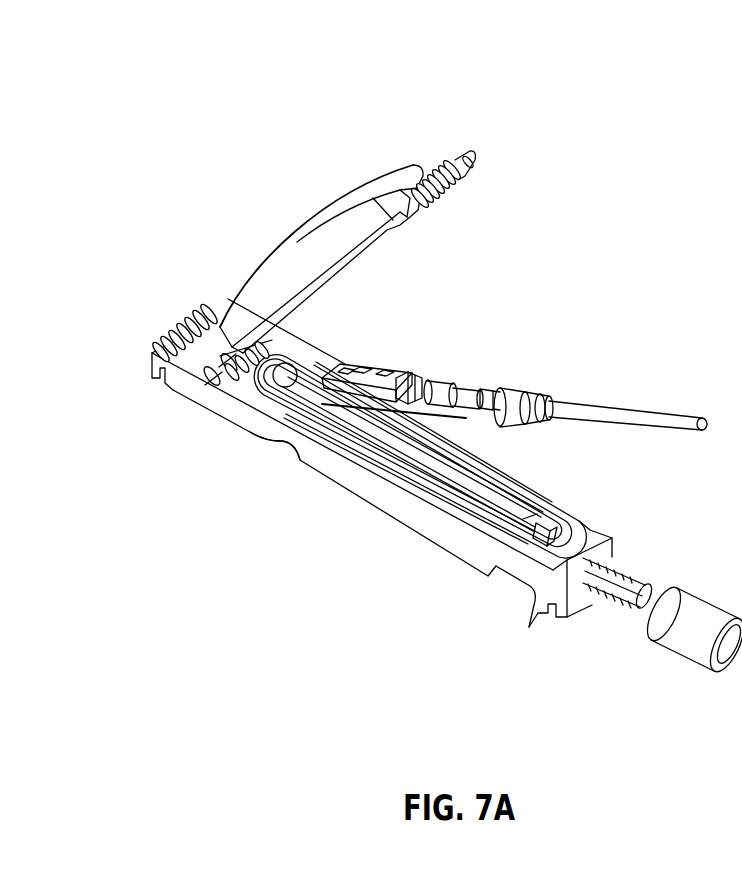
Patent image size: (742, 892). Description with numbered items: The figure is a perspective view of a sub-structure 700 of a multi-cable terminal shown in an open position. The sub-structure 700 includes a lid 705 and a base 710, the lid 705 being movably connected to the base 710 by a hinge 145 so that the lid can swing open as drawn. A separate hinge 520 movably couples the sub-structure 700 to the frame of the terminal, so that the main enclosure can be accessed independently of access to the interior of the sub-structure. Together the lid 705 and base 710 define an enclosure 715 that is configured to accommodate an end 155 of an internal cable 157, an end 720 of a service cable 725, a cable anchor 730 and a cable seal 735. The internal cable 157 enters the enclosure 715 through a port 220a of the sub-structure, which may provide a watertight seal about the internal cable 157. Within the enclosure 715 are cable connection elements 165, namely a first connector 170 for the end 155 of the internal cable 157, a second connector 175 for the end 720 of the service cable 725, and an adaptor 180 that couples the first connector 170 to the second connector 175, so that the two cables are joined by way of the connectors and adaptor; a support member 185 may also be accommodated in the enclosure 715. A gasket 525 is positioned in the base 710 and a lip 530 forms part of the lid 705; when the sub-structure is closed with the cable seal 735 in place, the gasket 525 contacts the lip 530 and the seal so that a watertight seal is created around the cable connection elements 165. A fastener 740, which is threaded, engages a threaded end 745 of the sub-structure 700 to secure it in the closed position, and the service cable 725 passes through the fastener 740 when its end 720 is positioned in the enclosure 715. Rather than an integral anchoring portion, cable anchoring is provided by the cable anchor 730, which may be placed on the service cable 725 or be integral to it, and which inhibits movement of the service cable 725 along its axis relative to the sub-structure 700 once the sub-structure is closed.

The sub-structure 700 is at (297, 85).
The lid 705 is at (331, 212).
The base 710 is at (533, 590).
The sub-enclosure 715 is at (500, 527).
The end of service cable 720 is at (508, 392).
The service cable 725 is at (673, 417).
The cable anchor 730 is at (513, 402).
The cable seal 735 is at (534, 421).
The fastener 740 is at (673, 655).
The threaded end 745 is at (458, 158).
The hinge 520 is at (183, 320).
The gasket 525 is at (588, 540).
The lip 530 is at (380, 252).
The hinge 145 is at (213, 372).
The end of internal cable 155 is at (312, 367).
The internal cable 157 is at (288, 360).
The cable connection elements 165 is at (480, 297).
The first connector 170 is at (383, 356).
The second connector 175 is at (417, 380).
The adaptor 180 is at (378, 368).
The support member 185 is at (446, 412).
The port 220a is at (270, 441).